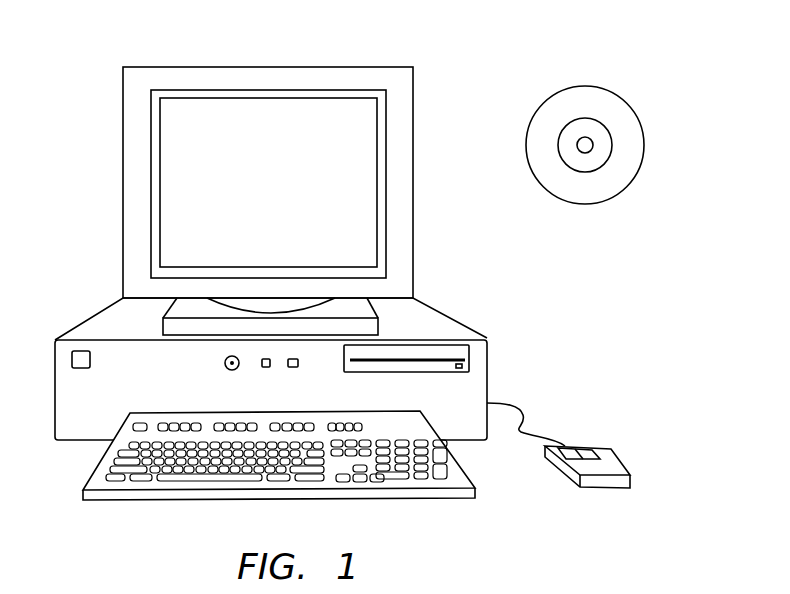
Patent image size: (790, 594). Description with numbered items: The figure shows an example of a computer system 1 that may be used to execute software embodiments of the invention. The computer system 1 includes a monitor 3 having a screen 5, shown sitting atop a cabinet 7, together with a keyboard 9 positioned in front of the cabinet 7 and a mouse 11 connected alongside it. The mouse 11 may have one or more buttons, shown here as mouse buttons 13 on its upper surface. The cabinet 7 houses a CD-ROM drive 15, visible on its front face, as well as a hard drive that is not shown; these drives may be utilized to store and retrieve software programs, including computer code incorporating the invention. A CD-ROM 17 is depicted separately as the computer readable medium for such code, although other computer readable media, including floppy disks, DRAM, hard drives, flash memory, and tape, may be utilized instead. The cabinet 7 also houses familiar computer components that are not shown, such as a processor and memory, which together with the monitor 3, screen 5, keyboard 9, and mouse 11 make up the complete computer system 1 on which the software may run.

The computer system 1 is at (368, 266).
The monitor 3 is at (234, 201).
The screen 5 is at (183, 154).
The cabinet 7 is at (308, 364).
The keyboard 9 is at (279, 470).
The mouse 11 is at (613, 436).
The mouse buttons 13 is at (585, 450).
The CD-ROM drive 15 is at (470, 360).
The CD-ROM 17 is at (600, 135).